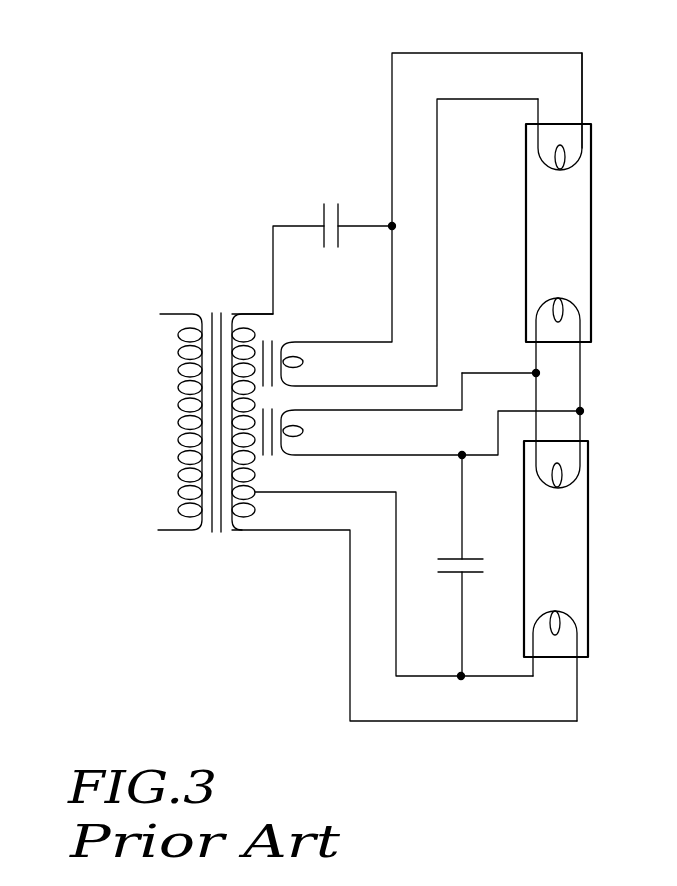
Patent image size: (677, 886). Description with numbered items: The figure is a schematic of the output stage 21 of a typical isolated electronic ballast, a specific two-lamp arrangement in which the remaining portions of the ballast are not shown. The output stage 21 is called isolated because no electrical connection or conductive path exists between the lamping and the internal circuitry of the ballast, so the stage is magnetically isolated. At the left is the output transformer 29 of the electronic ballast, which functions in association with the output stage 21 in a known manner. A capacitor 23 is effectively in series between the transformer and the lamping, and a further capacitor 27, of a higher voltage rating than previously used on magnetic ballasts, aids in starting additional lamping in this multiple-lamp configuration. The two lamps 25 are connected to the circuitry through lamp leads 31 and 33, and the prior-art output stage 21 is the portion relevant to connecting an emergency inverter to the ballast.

The output stage 21 is at (199, 128).
The capacitor 23 is at (313, 207).
The lamps 25 is at (558, 228).
The capacitor 27 is at (443, 585).
The output transformer 29 is at (128, 298).
The lamp lead 31 is at (588, 118).
The lamp lead 33 is at (580, 663).